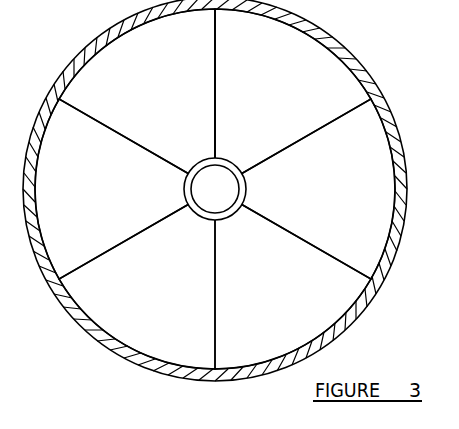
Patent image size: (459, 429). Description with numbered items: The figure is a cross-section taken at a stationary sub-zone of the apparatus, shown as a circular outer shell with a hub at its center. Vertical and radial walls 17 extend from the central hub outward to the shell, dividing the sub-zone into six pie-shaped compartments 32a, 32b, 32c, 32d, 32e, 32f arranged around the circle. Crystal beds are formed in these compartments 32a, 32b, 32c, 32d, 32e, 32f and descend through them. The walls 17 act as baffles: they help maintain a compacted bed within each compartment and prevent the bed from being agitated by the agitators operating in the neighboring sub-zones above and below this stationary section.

The vertical and radial walls 17 is at (213, 33).
The compartment 32a is at (285, 94).
The compartment 32b is at (355, 190).
The compartment 32c is at (297, 287).
The compartment 32d is at (167, 288).
The compartment 32e is at (106, 197).
The compartment 32f is at (153, 94).